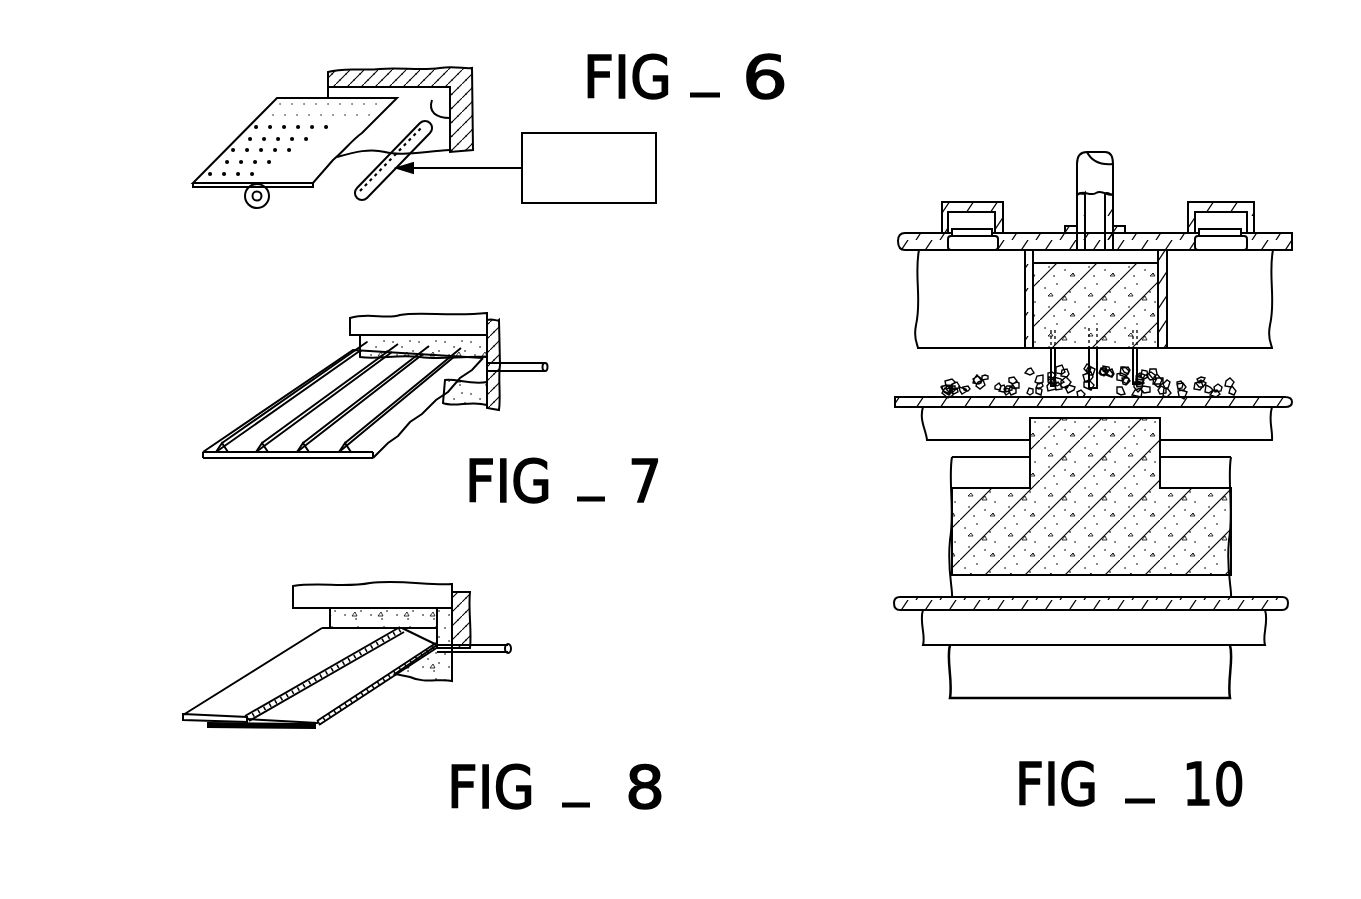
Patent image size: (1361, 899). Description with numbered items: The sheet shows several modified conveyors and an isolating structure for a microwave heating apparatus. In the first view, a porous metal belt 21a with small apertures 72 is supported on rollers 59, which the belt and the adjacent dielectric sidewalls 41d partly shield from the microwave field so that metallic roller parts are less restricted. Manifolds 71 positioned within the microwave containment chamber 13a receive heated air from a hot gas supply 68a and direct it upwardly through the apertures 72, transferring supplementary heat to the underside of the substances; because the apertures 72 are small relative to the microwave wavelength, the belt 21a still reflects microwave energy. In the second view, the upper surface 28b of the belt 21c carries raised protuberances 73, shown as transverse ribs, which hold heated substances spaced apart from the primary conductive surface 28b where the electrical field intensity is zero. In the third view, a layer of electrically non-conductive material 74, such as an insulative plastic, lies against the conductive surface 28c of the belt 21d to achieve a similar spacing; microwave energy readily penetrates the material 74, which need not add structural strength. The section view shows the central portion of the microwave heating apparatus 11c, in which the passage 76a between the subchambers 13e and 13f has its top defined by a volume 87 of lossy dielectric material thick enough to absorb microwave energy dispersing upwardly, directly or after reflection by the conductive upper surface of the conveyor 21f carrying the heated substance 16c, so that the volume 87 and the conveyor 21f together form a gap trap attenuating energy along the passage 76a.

In FIG. 6, the porous metal belt 21a is at (250, 130).
In FIG. 6, the apertures 72 is at (292, 126).
In FIG. 6, the rollers 59 is at (268, 190).
In FIG. 6, the manifolds 71 is at (383, 177).
In FIG. 6, the dielectric sidewalls 41d is at (467, 90).
In FIG. 6, the microwave containment chamber 13a is at (474, 113).
In FIG. 6, the hot gas supply 68a is at (537, 204).
In FIG. 7, the belt 21c is at (320, 423).
In FIG. 7, the raised protuberances 73 is at (322, 445).
In FIG. 7, the upper surface 28b is at (288, 446).
In FIG. 8, the belt 21d is at (312, 703).
In FIG. 8, the layer of electrically non-conductive material 74 is at (282, 692).
In FIG. 8, the conductive surface 28c is at (303, 713).
In FIG. 10, the microwave heating apparatus 11c is at (1255, 183).
In FIG. 10, the volume of lossy dielectric material 87 is at (1140, 296).
In FIG. 10, the passage 76a is at (1153, 365).
In FIG. 10, the heated substance 16c is at (945, 382).
In FIG. 10, the conveyor 21f is at (1283, 407).
In FIG. 10, the subchamber 13f is at (975, 475).
In FIG. 10, the subchamber 13e is at (1218, 470).